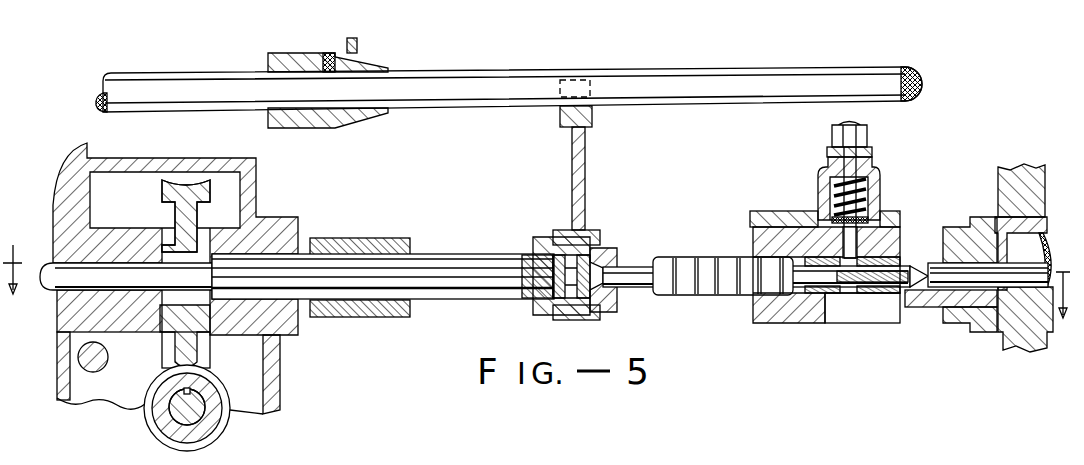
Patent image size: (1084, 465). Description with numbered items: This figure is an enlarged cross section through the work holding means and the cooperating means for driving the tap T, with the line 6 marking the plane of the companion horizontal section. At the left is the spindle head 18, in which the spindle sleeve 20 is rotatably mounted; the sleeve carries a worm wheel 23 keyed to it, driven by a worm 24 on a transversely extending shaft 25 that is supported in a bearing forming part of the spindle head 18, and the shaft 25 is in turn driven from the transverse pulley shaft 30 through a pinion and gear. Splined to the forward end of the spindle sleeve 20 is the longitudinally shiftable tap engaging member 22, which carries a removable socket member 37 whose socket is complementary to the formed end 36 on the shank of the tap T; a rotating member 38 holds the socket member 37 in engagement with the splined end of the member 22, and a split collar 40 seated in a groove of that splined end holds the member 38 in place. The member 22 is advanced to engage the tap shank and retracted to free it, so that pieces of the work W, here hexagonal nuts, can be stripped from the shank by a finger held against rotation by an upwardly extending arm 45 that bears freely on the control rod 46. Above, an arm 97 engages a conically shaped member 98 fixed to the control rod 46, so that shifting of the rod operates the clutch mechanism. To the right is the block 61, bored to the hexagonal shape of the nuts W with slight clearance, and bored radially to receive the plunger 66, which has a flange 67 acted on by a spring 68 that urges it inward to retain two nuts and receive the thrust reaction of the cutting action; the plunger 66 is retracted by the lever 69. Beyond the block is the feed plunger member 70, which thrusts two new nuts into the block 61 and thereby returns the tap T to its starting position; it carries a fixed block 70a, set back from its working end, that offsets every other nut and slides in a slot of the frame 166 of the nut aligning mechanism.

The section line 6- 6 is at (536, 291).
The spindle head 18 is at (248, 182).
The spindle sleeve 20 is at (300, 240).
The tap engaging member 22 is at (480, 237).
The worm wheel 23 is at (188, 186).
The worm 24 is at (207, 388).
The transversely extending shaft 25 is at (197, 420).
The pulley shaft 30 is at (102, 365).
The formed end of the tap shank 36 is at (607, 282).
The socket member 37 is at (580, 320).
The rotating member 38 is at (603, 243).
The split collar 40 is at (536, 300).
The upwardly extending arm 45 is at (582, 165).
The control rod member 46 is at (690, 77).
The block 61 is at (760, 240).
The plunger 66 is at (849, 248).
The flange 67 is at (880, 207).
The spring 68 is at (880, 190).
The lever 69 is at (873, 150).
The plunger member 70 is at (940, 270).
The block 70a is at (1017, 250).
The arm 97 is at (358, 44).
The conically shaped member 98 is at (366, 62).
The frame 166 is at (981, 332).
The tap T is at (870, 279).
The work W is at (722, 296).